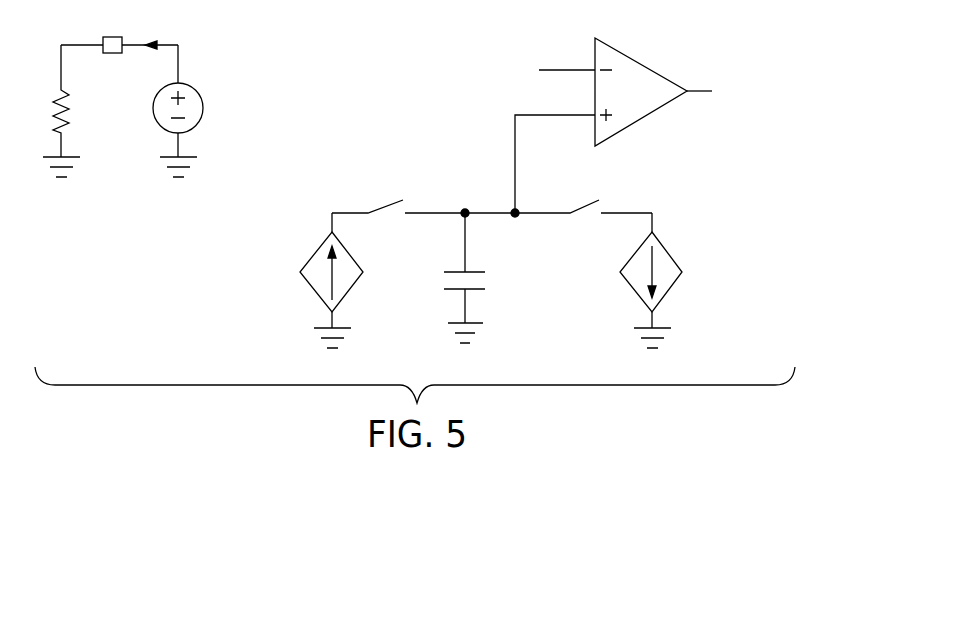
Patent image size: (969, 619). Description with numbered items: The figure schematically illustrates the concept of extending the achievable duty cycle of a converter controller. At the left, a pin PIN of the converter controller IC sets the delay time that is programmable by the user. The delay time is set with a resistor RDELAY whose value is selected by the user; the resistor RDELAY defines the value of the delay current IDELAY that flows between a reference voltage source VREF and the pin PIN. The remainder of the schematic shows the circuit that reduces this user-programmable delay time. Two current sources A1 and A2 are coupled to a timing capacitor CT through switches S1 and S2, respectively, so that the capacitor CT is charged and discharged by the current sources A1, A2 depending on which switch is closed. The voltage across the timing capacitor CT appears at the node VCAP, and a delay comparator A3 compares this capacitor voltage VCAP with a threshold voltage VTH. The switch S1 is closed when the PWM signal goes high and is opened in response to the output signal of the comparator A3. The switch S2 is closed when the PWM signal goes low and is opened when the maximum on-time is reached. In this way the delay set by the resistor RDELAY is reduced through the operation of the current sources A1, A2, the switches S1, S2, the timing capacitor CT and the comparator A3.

The resistor RDELAY is at (90, 111).
The pin PIN is at (119, 58).
The delay current IDELAY is at (153, 28).
The reference voltage source VREF is at (203, 111).
The current source A1 is at (305, 280).
The switch S1 is at (398, 194).
The capacitor voltage node VCAP is at (479, 201).
The timing capacitor CT is at (480, 278).
The switch S2 is at (581, 196).
The current source A2 is at (617, 280).
The delay comparator A3 is at (642, 125).
The threshold voltage VTH is at (548, 70).